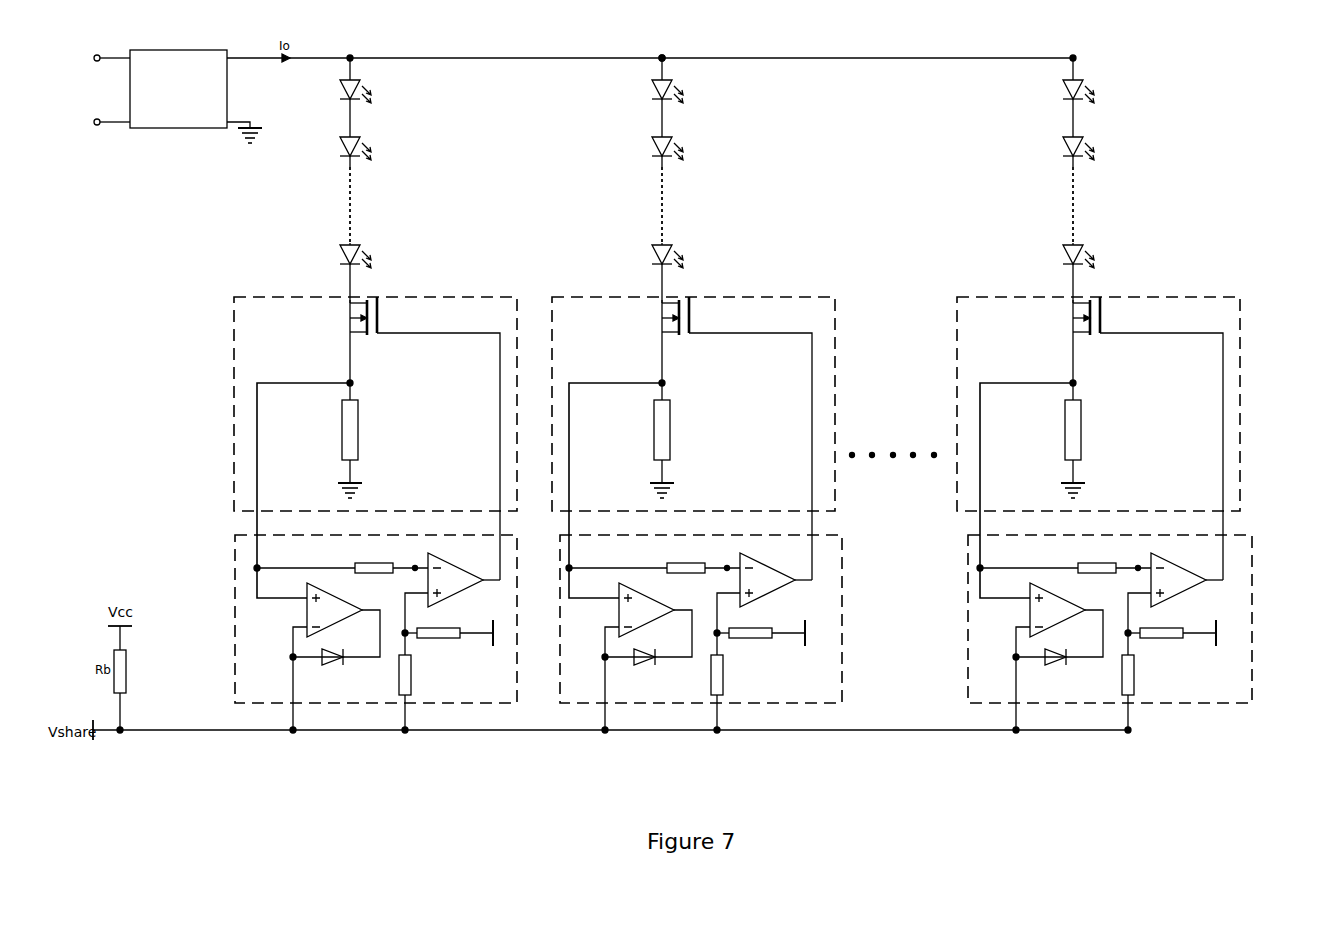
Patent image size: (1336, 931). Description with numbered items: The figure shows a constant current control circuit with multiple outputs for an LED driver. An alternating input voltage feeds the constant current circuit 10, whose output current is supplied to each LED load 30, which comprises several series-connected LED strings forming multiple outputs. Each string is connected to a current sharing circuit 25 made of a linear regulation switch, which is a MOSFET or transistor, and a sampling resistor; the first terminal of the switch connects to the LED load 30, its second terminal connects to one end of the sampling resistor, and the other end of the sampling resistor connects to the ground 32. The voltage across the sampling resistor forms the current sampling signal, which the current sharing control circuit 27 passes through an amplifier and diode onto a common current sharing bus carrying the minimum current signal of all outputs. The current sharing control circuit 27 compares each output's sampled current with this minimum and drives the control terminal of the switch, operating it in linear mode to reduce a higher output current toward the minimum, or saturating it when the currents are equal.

The constant current circuit 10 is at (165, 47).
The current sharing circuit 25 is at (247, 296).
The current sharing control circuit 27 is at (232, 543).
The LED load 30 is at (360, 187).
The ground 32 is at (370, 489).